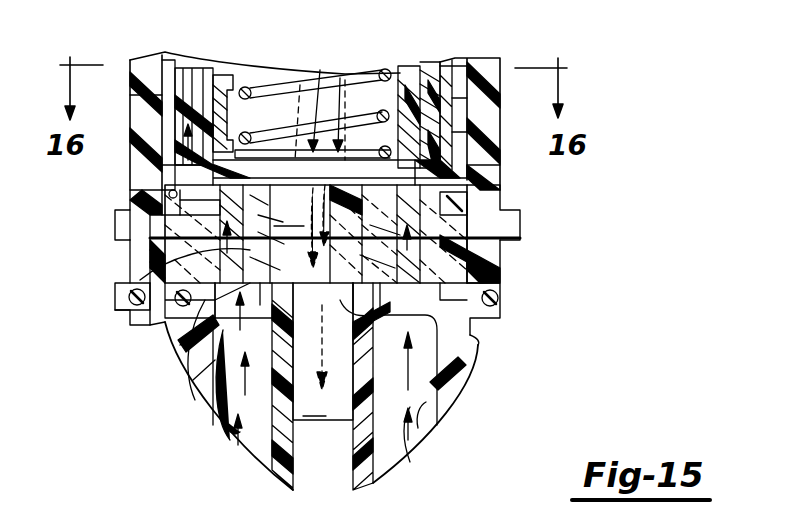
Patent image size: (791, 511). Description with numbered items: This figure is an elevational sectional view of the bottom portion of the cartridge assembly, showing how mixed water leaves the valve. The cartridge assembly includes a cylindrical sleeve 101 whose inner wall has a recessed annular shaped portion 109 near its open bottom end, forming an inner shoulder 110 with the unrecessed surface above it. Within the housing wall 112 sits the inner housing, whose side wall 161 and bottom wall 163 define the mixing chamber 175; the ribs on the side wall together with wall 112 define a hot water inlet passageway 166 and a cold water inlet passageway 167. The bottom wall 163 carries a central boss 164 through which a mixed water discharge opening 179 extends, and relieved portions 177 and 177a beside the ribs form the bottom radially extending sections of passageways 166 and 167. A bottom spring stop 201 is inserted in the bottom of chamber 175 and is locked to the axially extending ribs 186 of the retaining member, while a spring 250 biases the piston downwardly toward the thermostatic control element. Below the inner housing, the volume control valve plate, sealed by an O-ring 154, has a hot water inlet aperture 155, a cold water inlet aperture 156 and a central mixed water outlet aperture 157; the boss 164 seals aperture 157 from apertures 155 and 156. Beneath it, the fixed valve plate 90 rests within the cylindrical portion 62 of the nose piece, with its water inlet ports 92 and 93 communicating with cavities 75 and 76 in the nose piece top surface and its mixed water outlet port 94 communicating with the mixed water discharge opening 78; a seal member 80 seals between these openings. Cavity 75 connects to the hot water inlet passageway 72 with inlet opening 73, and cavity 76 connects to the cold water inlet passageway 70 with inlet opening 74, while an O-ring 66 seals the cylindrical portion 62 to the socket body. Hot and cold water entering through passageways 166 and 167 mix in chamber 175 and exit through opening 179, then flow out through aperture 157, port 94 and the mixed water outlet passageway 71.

The bottom wall 163 is at (208, 72).
The mixing chamber 175 is at (270, 73).
The mixed water discharge opening 179 is at (296, 160).
The spring 250 is at (390, 76).
The boss 164 is at (412, 80).
The ribs 186 is at (422, 72).
The side wall 161 is at (442, 64).
The cold water inlet passageway 167 is at (452, 98).
The bottom spring stop 201 is at (452, 132).
The cylindrical sleeve 101 is at (132, 97).
The hot water inlet passageway 166 is at (172, 110).
The wall 112 is at (192, 112).
The relieved portion 177a is at (180, 185).
The inner shoulder 110 is at (160, 197).
The O-ring 154 is at (135, 200).
The annular shaped portion 109 is at (195, 222).
The first arcuate hot water inlet aperture 155 is at (182, 260).
The water inlet port 92 is at (122, 308).
The O-ring 66 is at (152, 328).
The seal member 80 is at (188, 345).
The cavity 75 is at (222, 375).
The hot water inlet passageway 72 is at (230, 420).
The inlet opening 73 is at (217, 440).
The mixed water outlet aperture 157 is at (330, 234).
The mixed water outlet passageway 71 is at (323, 351).
The inlet opening 74 is at (381, 473).
The cold water inlet passageway 70 is at (420, 444).
The mixed water discharge opening 78 is at (440, 410).
The cavity 76 is at (448, 386).
The mixed water outlet port 94 is at (460, 356).
The cylindrical portion 62 is at (500, 290).
The water inlet port 93 is at (500, 286).
The fixed valve plate 90 is at (505, 264).
The second arcuate cold water inlet aperture 156 is at (490, 228).
The relieved portion 177 is at (480, 214).